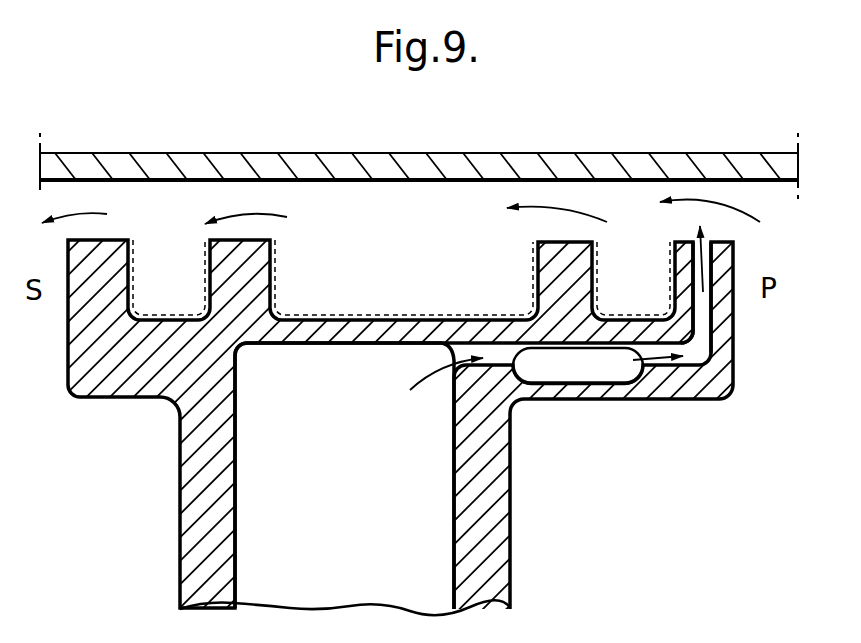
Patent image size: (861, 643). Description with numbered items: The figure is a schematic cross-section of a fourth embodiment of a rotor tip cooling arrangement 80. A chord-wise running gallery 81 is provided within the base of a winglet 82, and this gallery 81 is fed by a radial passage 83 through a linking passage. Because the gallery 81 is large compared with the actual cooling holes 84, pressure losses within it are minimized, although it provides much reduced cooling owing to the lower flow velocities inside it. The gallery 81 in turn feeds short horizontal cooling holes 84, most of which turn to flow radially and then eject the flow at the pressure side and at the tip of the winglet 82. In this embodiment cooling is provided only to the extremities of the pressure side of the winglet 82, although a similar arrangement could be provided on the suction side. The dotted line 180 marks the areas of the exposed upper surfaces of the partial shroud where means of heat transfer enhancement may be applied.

The arrangement 80 is at (157, 454).
The chord-wise running gallery 81 is at (590, 372).
The winglet 82 is at (700, 345).
The radial passage 83 is at (353, 558).
The cooling holes 84 is at (707, 293).
The dotted line 180 is at (138, 268).